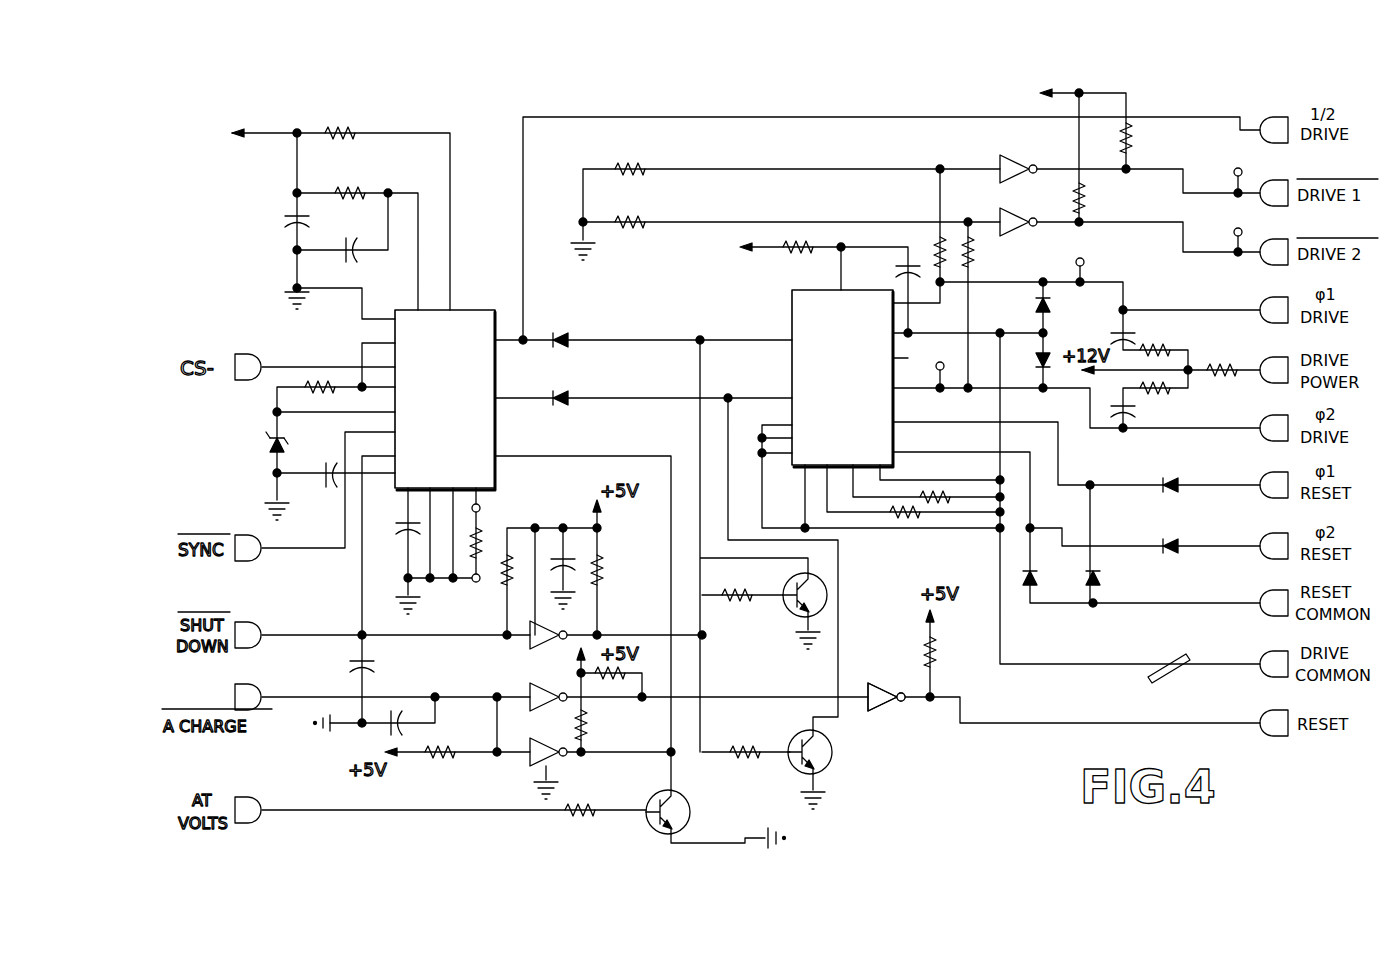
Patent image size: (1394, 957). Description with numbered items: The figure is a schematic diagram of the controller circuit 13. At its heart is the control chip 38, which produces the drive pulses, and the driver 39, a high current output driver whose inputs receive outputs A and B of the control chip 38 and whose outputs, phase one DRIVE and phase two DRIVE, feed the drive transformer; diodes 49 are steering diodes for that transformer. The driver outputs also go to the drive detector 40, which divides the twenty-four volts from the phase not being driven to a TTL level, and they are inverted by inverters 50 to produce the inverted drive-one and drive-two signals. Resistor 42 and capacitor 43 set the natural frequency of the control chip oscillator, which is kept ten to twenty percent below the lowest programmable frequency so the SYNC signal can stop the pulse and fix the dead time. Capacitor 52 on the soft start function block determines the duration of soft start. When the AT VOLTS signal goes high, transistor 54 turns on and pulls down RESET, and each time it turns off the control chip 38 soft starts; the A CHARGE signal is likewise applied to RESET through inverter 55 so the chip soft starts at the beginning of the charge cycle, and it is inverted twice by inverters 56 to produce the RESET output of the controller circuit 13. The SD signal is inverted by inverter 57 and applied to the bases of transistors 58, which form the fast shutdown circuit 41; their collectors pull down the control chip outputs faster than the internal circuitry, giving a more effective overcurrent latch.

The controller circuit 13 is at (452, 113).
The drive detector 40 is at (804, 107).
The control chip 38 is at (480, 308).
The driver 39 is at (788, 306).
The fast shutdown circuit 41 is at (845, 780).
The resistor 42 is at (480, 545).
The capacitor 43 is at (296, 465).
The diodes 49 is at (1050, 350).
The inverters 50 is at (1003, 214).
The capacitor 52 is at (406, 535).
The transistor 54 is at (646, 822).
The inverter 55 is at (530, 765).
The inverters 56 is at (560, 685).
The inverter 57 is at (530, 648).
The transistors 58 is at (790, 580).